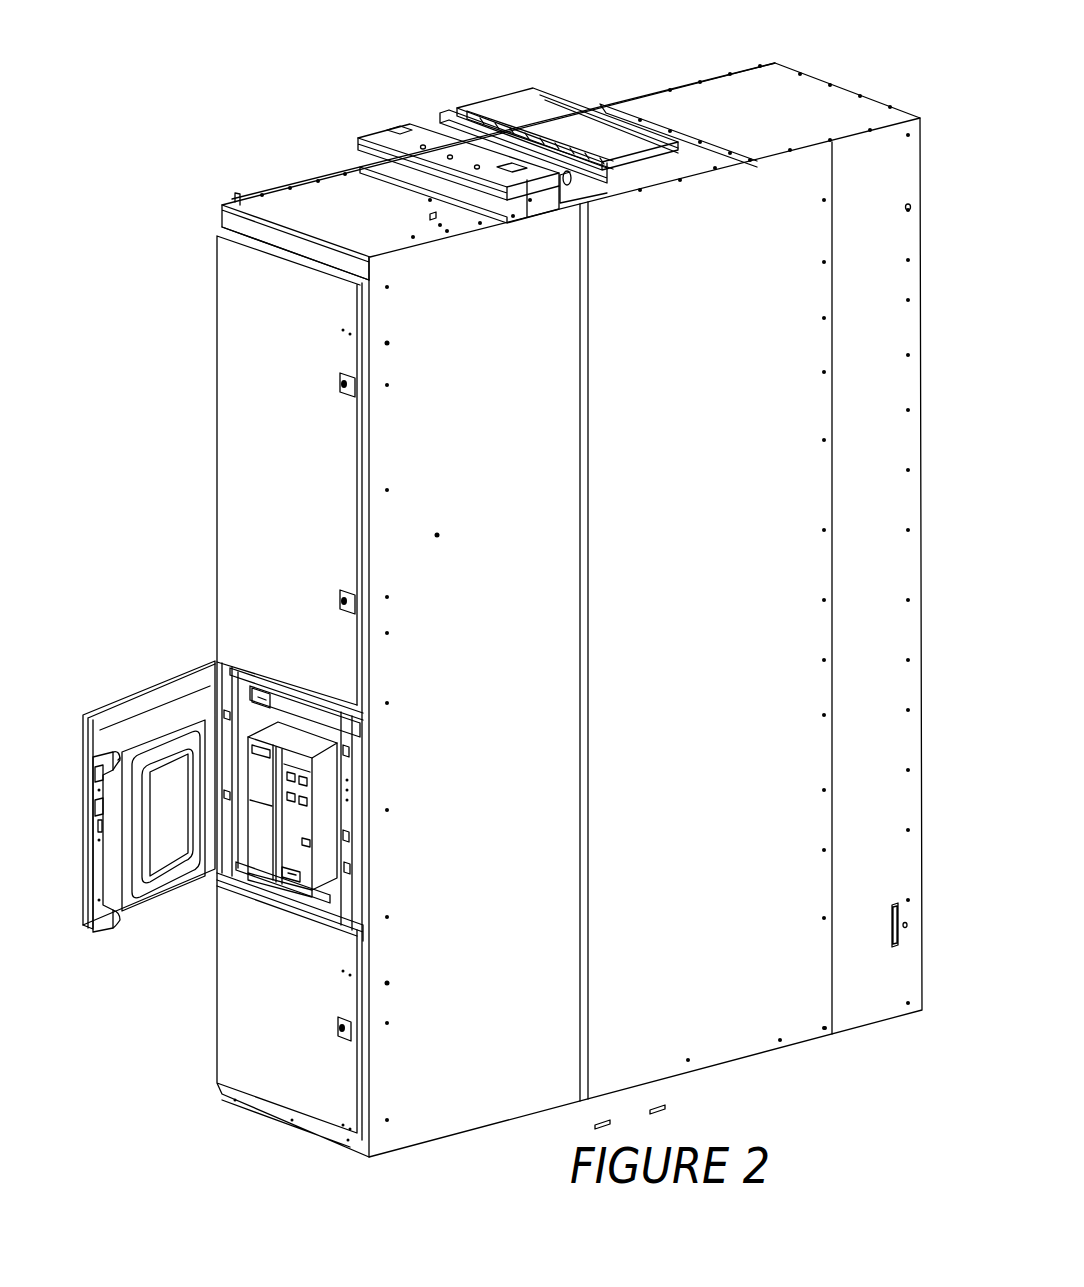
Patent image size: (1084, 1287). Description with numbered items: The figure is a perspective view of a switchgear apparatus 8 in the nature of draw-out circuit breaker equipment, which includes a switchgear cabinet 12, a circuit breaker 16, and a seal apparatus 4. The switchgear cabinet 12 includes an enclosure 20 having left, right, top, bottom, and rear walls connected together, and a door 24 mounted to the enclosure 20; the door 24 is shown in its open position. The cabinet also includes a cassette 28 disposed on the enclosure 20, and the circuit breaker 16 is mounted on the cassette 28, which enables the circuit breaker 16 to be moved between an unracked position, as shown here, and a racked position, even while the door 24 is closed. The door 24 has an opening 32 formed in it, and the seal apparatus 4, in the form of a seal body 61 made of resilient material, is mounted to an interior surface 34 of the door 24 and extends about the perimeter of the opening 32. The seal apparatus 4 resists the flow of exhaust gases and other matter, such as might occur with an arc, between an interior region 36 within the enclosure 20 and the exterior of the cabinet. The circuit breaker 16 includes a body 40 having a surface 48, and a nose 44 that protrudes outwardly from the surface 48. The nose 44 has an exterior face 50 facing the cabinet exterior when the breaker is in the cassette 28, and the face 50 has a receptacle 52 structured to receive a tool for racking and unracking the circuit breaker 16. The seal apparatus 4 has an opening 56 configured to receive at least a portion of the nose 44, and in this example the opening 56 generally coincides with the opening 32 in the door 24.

The switchgear apparatus 8 is at (850, 80).
The switchgear cabinet 12 is at (926, 324).
The enclosure 20 is at (927, 188).
The seal apparatus 4 is at (166, 726).
The interior surface 34 is at (198, 682).
The seal body 61 is at (135, 746).
The opening 32 is at (185, 767).
The opening 56 is at (158, 870).
The door 24 is at (80, 803).
The surface 48 is at (237, 690).
The interior region 36 is at (252, 680).
The nose 44 is at (272, 707).
The body 40 is at (312, 737).
The exterior face 50 is at (303, 852).
The cassette 28 is at (352, 820).
The circuit breaker 16 is at (260, 860).
The receptacle 52 is at (285, 875).